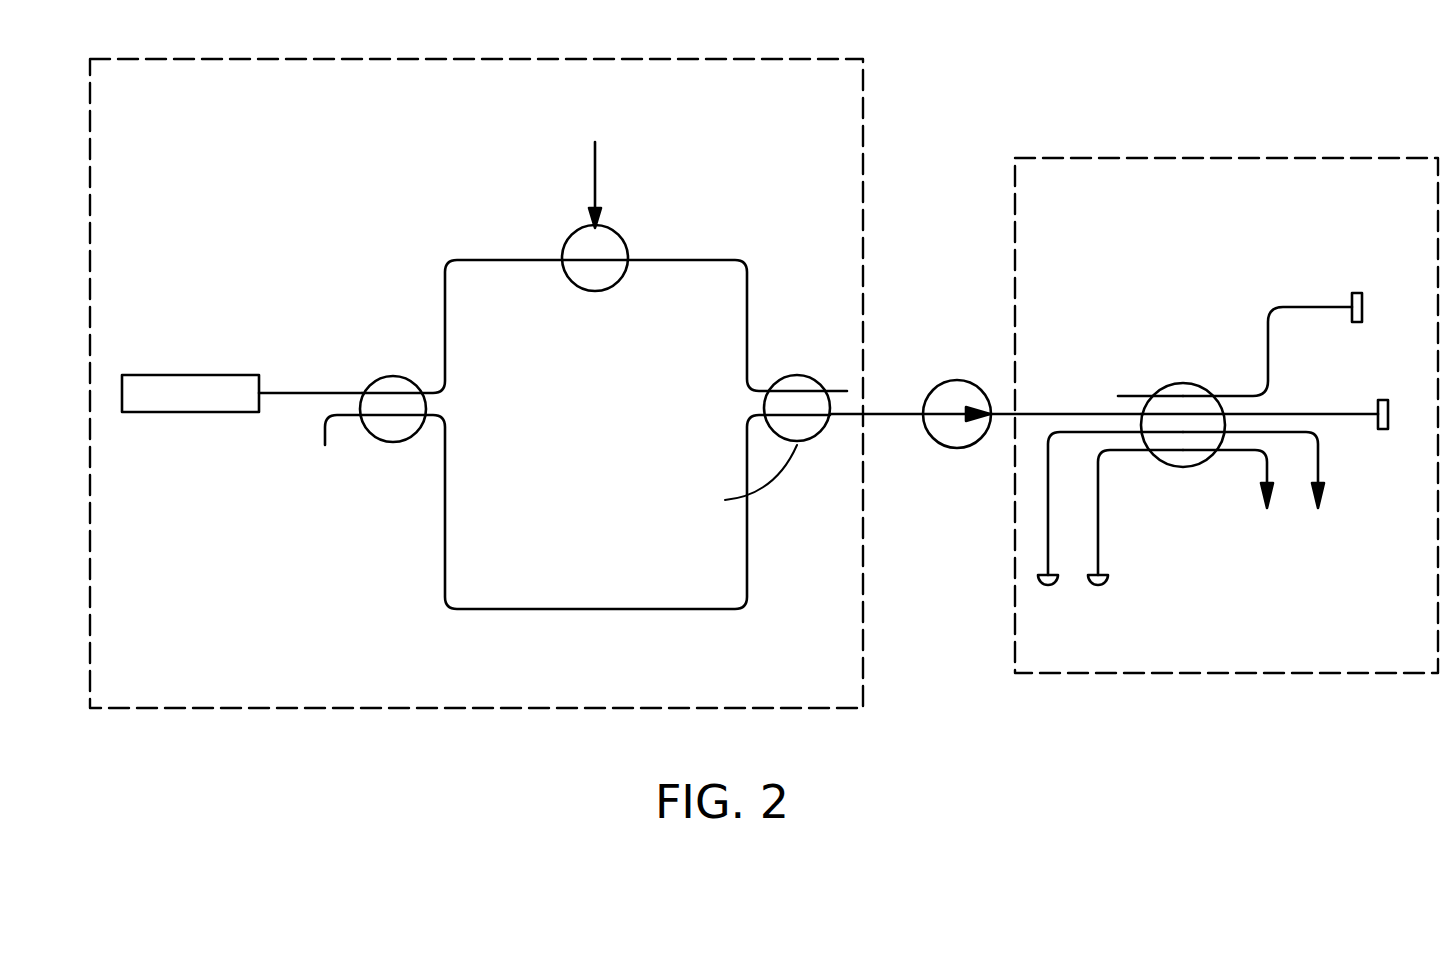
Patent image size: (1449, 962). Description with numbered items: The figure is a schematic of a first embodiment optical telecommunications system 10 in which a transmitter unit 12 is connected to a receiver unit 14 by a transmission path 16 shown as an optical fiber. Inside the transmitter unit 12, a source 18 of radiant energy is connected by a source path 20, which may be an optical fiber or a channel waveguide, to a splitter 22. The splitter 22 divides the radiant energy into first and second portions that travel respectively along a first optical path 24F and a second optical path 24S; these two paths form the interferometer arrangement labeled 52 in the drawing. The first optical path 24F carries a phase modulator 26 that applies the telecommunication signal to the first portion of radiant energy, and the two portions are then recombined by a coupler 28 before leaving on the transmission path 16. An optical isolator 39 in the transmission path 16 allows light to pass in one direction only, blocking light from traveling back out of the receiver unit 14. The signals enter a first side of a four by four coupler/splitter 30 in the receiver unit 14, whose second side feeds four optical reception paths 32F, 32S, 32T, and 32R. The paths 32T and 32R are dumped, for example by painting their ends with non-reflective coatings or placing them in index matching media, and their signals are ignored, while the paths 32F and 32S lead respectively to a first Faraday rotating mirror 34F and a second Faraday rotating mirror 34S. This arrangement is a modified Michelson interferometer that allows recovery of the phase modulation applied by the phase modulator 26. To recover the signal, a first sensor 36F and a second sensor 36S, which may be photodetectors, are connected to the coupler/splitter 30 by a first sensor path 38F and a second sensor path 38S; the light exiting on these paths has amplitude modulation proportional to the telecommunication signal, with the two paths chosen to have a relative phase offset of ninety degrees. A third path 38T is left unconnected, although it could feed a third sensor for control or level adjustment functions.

The optical telecommunications system 10 is at (957, 205).
The transmitter unit 12 is at (676, 58).
The receiver unit 14 is at (1275, 157).
The transmission path 16 is at (880, 414).
The source 18 is at (218, 413).
The source path 20 is at (290, 390).
The splitter 22 is at (393, 443).
The first optical path 24F is at (473, 260).
The second optical path 24S is at (582, 608).
The phase modulator 26 is at (620, 282).
The coupler 28 is at (795, 376).
The coupler/splitter 30 is at (1185, 466).
The first optical reception path 32F is at (1275, 305).
The second optical reception path 32S is at (1335, 424).
The fourth optical reception path 32R is at (1262, 478).
The third optical reception path 32T is at (1320, 467).
The first Faraday rotating mirror 34F is at (1362, 307).
The second Faraday rotating mirror 34S is at (1383, 400).
The first sensor 36F is at (1038, 578).
The second sensor 36S is at (1107, 583).
The first sensor path 38F is at (1048, 520).
The second sensor path 38S is at (1098, 535).
The third sensor path 38T is at (1130, 396).
The optical isolator 39 is at (957, 380).
The interferometer 52 is at (603, 433).